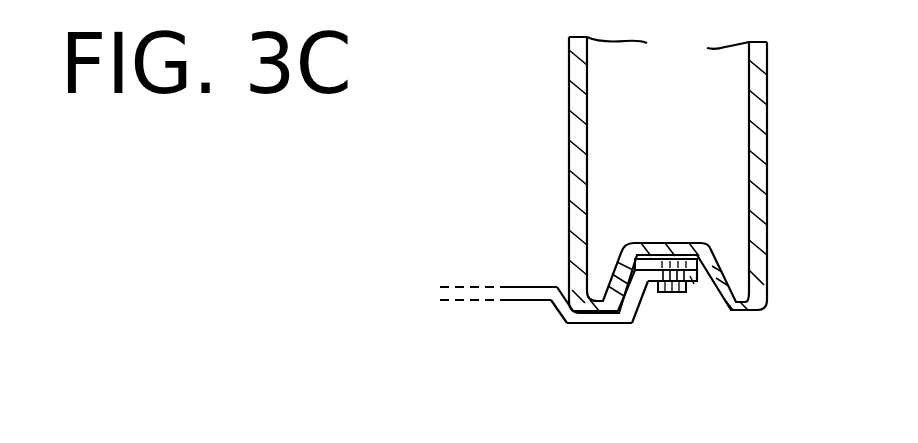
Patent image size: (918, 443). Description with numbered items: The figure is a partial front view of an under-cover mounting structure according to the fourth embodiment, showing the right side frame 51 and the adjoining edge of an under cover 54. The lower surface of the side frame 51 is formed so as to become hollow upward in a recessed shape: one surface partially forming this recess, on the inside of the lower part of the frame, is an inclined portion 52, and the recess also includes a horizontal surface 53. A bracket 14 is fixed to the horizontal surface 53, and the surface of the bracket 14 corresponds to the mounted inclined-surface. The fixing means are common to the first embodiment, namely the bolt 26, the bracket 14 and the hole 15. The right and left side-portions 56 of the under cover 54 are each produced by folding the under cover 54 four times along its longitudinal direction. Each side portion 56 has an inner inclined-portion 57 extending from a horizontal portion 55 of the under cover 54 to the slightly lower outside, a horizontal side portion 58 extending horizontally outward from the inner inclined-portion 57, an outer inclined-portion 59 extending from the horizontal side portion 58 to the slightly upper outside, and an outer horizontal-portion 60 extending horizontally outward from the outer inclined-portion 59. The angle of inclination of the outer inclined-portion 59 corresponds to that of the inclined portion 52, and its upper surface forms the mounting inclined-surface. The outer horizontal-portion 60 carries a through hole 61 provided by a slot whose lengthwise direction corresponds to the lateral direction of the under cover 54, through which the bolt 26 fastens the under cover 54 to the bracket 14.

The side frame 51 is at (568, 128).
The inclined portion 52 is at (608, 297).
The horizontal surface 53 is at (640, 262).
The bracket 14 is at (708, 261).
The hole 15 is at (691, 250).
The bolt 26 is at (679, 294).
The through hole 61 is at (690, 277).
The under cover 54 is at (567, 321).
The horizontal portion 55 is at (520, 287).
The side portion 56 is at (605, 351).
The inner inclined-portion 57 is at (556, 323).
The horizontal side portion 58 is at (592, 324).
The outer inclined-portion 59 is at (645, 298).
The outer horizontal-portion 60 is at (656, 293).